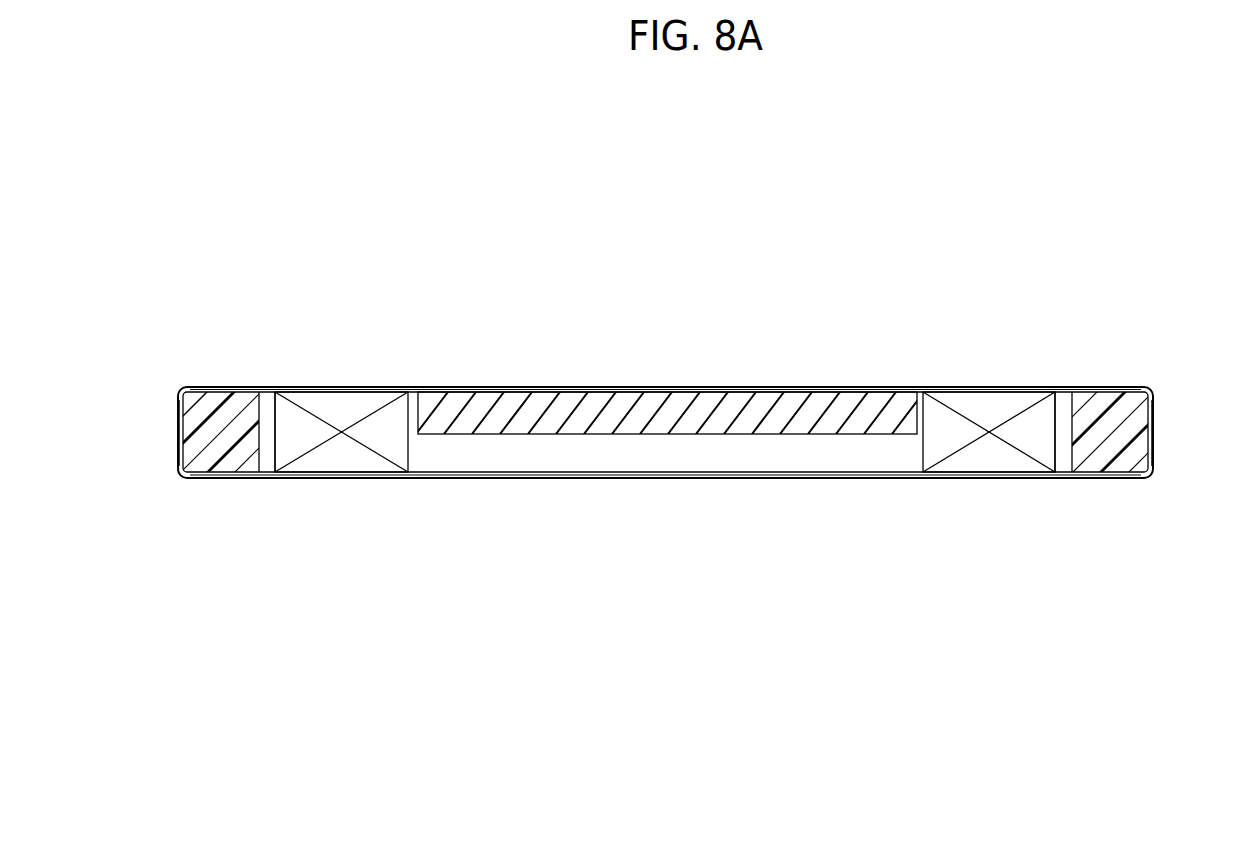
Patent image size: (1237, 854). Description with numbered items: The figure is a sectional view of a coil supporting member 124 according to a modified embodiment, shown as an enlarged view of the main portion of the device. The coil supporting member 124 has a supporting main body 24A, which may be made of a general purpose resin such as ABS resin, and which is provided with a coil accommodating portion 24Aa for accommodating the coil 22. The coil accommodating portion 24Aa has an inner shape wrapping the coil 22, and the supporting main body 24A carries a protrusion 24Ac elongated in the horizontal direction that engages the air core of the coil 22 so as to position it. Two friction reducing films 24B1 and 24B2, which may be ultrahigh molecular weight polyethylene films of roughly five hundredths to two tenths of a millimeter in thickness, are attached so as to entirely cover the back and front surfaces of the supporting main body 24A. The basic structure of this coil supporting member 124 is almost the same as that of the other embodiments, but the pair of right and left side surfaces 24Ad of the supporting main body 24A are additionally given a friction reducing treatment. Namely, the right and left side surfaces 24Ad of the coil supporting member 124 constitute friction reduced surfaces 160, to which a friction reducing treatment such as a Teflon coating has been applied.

The coil supporting member 124 is at (820, 373).
The coil 22 is at (998, 478).
The supporting main body 24A is at (1087, 390).
The coil accommodating portion 24Aa is at (268, 437).
The protrusion 24Ac is at (713, 423).
The side surface 24Ad is at (178, 433).
The friction reducing film 24B1 is at (612, 478).
The friction reducing film 24B2 is at (612, 387).
The friction reduced surface 160 is at (177, 413).